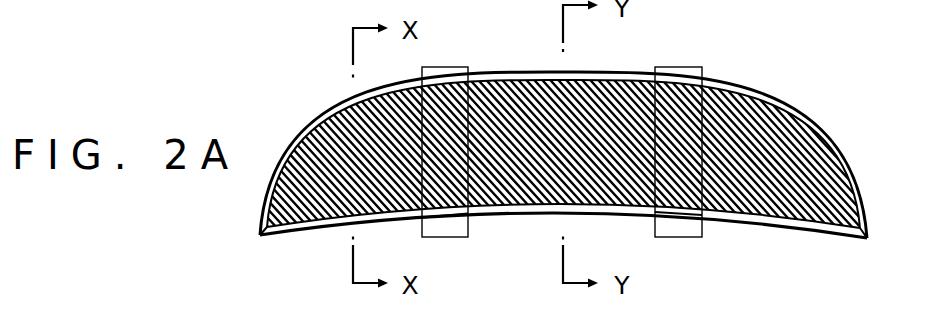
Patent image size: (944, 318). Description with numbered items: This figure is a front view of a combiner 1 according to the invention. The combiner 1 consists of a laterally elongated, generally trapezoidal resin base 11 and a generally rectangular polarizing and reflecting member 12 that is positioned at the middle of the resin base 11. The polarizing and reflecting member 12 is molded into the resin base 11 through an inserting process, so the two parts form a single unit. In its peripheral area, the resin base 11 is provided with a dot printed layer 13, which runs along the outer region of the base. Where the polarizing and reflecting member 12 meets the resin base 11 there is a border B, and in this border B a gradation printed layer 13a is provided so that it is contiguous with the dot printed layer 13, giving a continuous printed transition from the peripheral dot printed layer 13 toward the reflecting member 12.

The combiner 1 is at (647, 48).
The resin base 11 is at (330, 107).
The polarizing and reflecting member 12 is at (548, 93).
The dot printed layer 13 is at (300, 230).
The gradation printed layer 13a is at (453, 221).
The border B is at (448, 67).